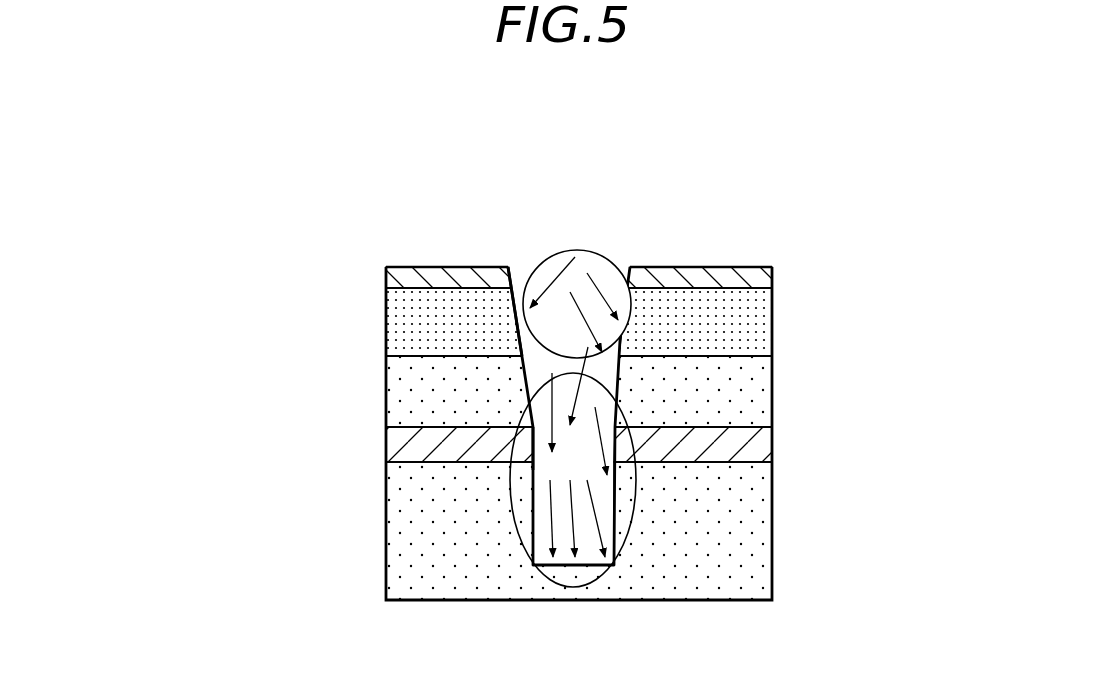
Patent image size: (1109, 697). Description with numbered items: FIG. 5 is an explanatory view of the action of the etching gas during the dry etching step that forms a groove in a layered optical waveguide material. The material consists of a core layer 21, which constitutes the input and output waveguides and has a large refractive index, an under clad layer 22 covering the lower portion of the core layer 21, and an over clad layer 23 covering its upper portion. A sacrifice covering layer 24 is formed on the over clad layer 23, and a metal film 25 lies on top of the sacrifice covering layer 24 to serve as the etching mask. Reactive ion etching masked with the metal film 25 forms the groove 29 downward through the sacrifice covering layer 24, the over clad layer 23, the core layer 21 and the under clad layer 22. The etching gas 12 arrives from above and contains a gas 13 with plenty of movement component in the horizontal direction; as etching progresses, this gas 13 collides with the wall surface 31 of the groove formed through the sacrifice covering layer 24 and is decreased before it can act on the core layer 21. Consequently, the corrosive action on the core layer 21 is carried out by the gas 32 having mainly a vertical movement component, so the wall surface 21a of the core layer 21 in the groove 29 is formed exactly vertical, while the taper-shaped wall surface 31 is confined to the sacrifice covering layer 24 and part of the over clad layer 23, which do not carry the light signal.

The etching gas 12 is at (541, 262).
The gas containing plenty of movement component to horizontal direction 13 is at (592, 252).
The core layer 21 is at (405, 442).
The wall surface 21a is at (528, 448).
The under clad layer 22 is at (772, 560).
The over clad layer 23 is at (773, 393).
The sacrifice covering layer 24 is at (773, 312).
The metal film 25 is at (717, 267).
The groove 29 is at (614, 511).
The wall surface 31 is at (520, 322).
The gas containing mainly movement component to vertical direction 32 is at (530, 412).